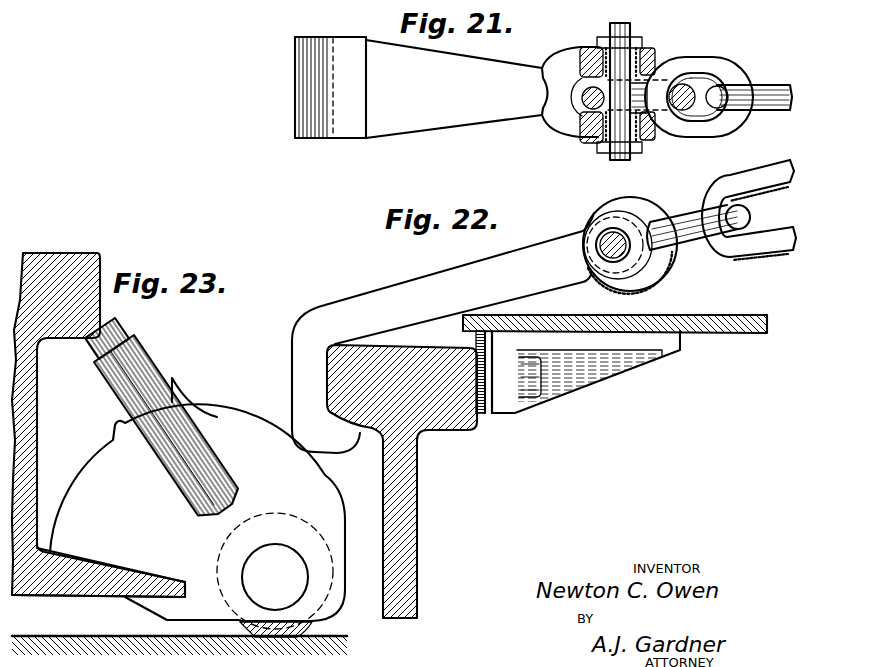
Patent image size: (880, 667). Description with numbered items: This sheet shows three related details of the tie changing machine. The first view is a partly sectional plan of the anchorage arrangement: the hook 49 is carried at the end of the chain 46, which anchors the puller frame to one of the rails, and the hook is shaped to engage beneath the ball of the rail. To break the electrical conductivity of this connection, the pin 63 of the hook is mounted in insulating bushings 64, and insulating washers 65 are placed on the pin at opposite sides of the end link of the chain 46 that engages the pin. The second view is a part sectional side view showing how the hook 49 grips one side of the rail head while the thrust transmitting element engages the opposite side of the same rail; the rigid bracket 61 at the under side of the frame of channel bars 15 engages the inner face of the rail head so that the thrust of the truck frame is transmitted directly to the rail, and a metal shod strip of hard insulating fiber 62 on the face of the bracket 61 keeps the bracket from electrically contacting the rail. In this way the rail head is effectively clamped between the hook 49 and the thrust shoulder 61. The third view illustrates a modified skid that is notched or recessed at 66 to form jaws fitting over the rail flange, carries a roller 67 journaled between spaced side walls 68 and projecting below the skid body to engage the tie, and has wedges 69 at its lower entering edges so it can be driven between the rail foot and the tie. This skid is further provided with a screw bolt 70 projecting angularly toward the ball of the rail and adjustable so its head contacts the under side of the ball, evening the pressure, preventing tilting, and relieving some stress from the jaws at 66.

In FIG. 23, the channel bars 15 is at (722, 331).
In FIG. 21, the chain 46 is at (746, 78).
In FIG. 22, the chain 46 is at (741, 247).
In FIG. 21, the hook 49 is at (315, 87).
In FIG. 22, the hook 49 is at (357, 307).
In FIG. 23, the rigid brackets 61 is at (556, 352).
In FIG. 23, the metal shod strip of hard insulating fiber 62 is at (482, 411).
In FIG. 21, the pin 63 is at (622, 154).
In FIG. 22, the pin 63 is at (611, 263).
In FIG. 21, the insulating bushings 64 is at (648, 48).
In FIG. 22, the insulating bushings 64 is at (660, 281).
In FIG. 21, the insulating washers 65 is at (656, 95).
In FIG. 23, the notch or recess 66 is at (125, 574).
In FIG. 23, the roller 67 is at (302, 630).
In FIG. 23, the side walls 68 is at (197, 503).
In FIG. 23, the wedges 69 is at (133, 606).
In FIG. 23, the screw bolt 70 is at (147, 373).